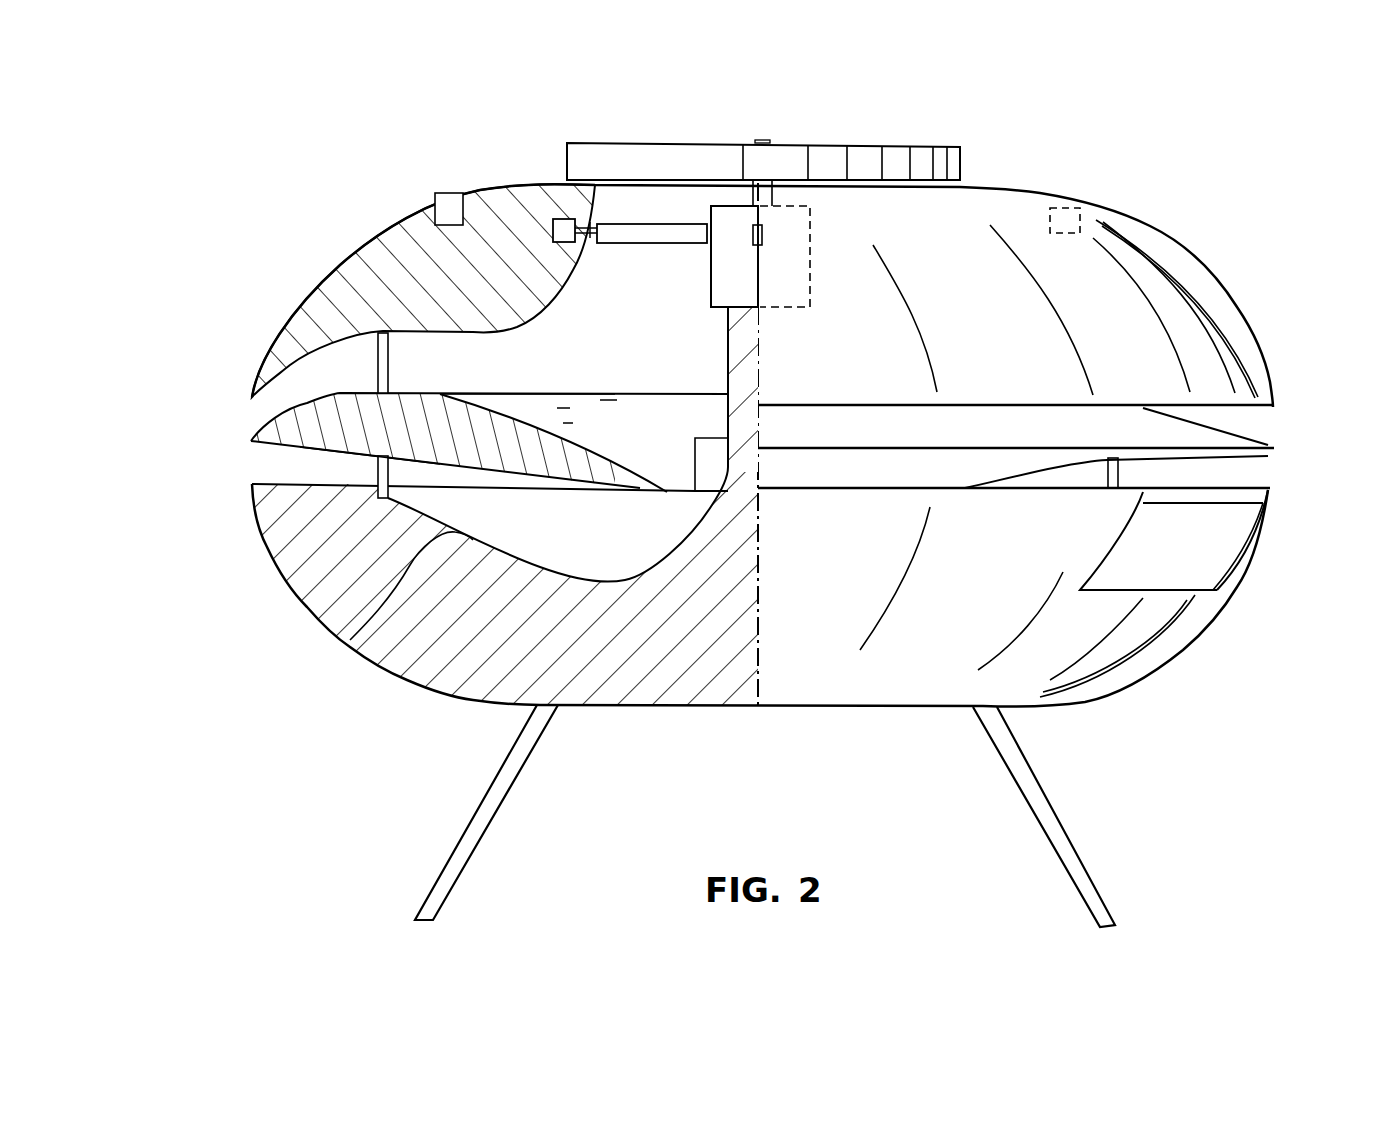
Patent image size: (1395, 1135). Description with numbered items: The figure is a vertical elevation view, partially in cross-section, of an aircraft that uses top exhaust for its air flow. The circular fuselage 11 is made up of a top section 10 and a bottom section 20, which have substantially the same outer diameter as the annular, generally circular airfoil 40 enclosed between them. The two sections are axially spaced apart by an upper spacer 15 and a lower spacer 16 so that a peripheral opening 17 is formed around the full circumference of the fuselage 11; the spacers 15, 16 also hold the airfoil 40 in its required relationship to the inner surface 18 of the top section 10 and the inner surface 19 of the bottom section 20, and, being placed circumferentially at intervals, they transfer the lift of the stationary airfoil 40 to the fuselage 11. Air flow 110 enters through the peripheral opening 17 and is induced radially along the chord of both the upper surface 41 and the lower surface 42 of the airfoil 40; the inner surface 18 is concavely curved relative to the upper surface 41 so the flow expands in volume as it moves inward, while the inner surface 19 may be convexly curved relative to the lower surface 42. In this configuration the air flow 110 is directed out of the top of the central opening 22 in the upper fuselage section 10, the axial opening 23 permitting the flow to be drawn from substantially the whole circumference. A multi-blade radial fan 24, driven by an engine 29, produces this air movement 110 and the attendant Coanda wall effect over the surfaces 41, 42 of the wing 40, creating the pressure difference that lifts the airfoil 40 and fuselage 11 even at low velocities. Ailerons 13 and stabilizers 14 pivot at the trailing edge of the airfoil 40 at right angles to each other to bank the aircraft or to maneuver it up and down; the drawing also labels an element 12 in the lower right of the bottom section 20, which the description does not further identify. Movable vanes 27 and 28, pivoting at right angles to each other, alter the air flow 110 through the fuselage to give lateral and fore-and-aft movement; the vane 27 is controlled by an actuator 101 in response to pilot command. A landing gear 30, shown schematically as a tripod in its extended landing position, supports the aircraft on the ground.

The top section 10 is at (330, 263).
The circular fuselage 11 is at (1219, 259).
The outlet panel 12 is at (1207, 543).
The ailerons 13 is at (703, 477).
The stabilizers 14 is at (623, 480).
The upper spacer 15 is at (378, 352).
The lower spacer 16 is at (375, 497).
The peripheral opening 17 is at (252, 451).
The inner surface 18 is at (450, 340).
The inner surface 19 is at (350, 640).
The bottom section 20 is at (283, 573).
The central opening 22 is at (657, 190).
The axial opening 23 is at (446, 205).
The multi-blade radial fan 24 is at (883, 153).
The movable vane 27 is at (655, 232).
The movable vane 28 is at (762, 235).
The engine 29 is at (745, 275).
The landing gear 30 is at (508, 757).
The annular airfoil 40 is at (253, 438).
The upper surface 41 is at (500, 420).
The lower surface 42 is at (447, 465).
The actuator 101 is at (568, 243).
The air flow 110 is at (522, 158).